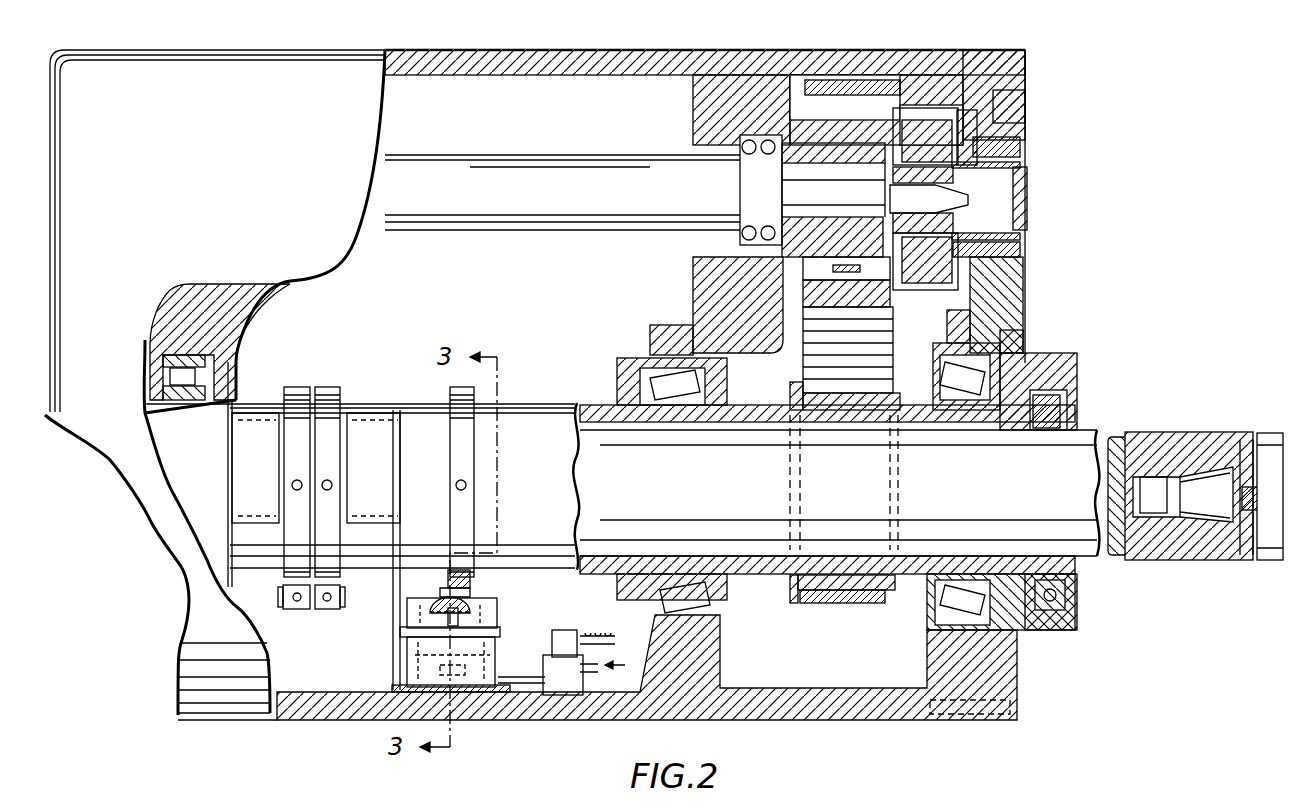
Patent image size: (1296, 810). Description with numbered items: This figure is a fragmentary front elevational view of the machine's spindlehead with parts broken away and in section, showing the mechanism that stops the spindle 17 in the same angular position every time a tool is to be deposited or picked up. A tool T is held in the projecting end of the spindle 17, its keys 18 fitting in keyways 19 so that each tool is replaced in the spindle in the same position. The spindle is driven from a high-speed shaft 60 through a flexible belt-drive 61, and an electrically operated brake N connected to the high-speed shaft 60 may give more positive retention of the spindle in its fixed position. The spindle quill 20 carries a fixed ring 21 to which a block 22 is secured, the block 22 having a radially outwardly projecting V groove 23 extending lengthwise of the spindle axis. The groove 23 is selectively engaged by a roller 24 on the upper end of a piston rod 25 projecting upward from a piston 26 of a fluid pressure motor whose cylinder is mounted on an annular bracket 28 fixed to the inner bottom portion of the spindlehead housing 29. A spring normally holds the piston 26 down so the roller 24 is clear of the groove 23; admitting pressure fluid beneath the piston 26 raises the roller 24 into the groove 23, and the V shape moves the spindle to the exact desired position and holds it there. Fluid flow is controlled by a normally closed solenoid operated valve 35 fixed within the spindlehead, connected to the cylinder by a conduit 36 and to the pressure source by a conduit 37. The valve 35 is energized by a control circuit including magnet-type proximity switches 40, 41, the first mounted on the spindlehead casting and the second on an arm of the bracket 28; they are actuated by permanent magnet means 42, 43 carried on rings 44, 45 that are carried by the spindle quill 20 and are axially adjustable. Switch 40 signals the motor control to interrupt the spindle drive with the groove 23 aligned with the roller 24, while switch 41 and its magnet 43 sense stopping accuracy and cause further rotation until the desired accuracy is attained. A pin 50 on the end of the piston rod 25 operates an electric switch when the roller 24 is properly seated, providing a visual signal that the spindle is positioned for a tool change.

The high-speed shaft 60 is at (565, 160).
The brake N is at (960, 140).
The flexible belt-drive 61 is at (885, 347).
The spindle quill 20 is at (740, 575).
The ring 21 is at (455, 393).
The proximity switch 40 is at (245, 454).
The proximity switch 41 is at (375, 462).
The ring 44 is at (295, 388).
The ring 45 is at (328, 388).
The permanent magnet means 42 is at (283, 598).
The permanent magnet 43 is at (340, 598).
The annular bracket 28 is at (395, 688).
The roller 24 is at (448, 583).
The block 22 is at (470, 588).
The V groove 23 is at (470, 602).
The pin 50 is at (458, 620).
The piston rod 25 is at (420, 625).
The piston 26 is at (495, 645).
The conduit 36 is at (515, 685).
The solenoid operated valve 35 is at (583, 683).
The conduit 37 is at (610, 651).
The spindlehead housing 29 is at (820, 705).
The spindle 17 is at (1172, 562).
The key 18 is at (1240, 455).
The keyway 19 is at (1242, 497).
The tool T is at (1266, 433).